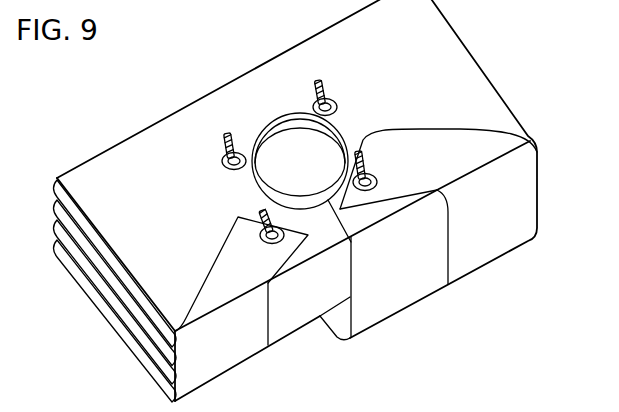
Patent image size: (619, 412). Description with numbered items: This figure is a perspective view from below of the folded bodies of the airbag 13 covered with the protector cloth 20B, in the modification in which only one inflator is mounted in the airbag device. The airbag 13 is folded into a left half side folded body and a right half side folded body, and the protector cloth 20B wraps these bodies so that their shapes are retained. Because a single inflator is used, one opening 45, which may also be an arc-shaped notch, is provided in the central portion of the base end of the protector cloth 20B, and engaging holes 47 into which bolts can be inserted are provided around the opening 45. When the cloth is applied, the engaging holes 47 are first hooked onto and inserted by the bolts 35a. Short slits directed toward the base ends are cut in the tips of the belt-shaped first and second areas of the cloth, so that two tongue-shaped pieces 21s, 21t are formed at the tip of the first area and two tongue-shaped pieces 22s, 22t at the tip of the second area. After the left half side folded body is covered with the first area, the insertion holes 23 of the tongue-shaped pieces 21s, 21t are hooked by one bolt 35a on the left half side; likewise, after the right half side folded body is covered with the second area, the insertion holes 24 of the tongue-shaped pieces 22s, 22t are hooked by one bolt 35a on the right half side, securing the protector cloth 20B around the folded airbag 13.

The airbag 13 is at (110, 296).
The protector cloth 20B is at (447, 45).
The tongue-shaped piece 21s is at (213, 264).
The tongue-shaped piece 22s is at (467, 143).
The tongue-shaped piece 21t is at (315, 240).
The tongue-shaped piece 22t is at (360, 222).
The insertion hole 23 is at (270, 243).
The insertion hole 24 is at (378, 183).
The bolt 35a is at (318, 78).
The opening 45 is at (333, 130).
The engaging hole 47 is at (338, 97).